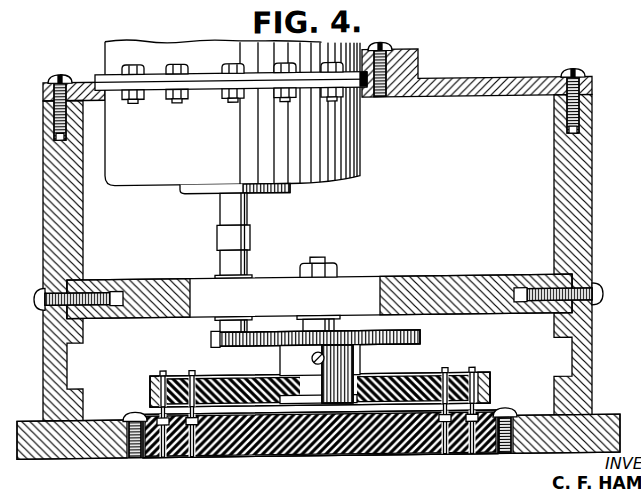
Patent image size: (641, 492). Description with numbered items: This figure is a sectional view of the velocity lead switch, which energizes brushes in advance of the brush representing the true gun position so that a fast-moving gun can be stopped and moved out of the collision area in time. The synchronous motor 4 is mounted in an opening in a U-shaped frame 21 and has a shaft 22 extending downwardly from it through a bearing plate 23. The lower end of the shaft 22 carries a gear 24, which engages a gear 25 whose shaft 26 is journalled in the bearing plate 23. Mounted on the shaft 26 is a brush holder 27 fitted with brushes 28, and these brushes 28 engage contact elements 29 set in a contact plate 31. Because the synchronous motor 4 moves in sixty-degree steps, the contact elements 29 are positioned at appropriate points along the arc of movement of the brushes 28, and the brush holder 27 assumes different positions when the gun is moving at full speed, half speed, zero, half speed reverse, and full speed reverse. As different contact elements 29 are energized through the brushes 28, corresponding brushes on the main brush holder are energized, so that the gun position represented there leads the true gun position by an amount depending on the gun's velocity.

The synchronous motor 4 is at (194, 48).
The U-shaped frame 21 is at (592, 246).
The shaft 22 is at (250, 225).
The bearing plate 23 is at (454, 281).
The gear 24 is at (213, 339).
The gear 25 is at (420, 337).
The shaft 26 is at (360, 362).
The brush holder 27 is at (420, 377).
The brushes 28 is at (200, 373).
The contact elements 29 is at (195, 459).
The contact plate 31 is at (301, 459).